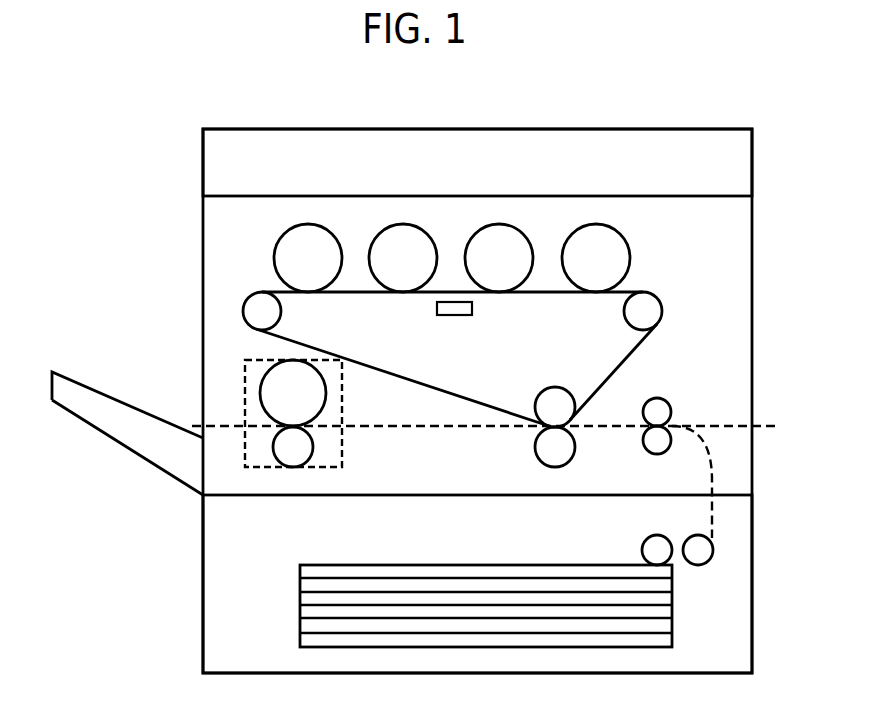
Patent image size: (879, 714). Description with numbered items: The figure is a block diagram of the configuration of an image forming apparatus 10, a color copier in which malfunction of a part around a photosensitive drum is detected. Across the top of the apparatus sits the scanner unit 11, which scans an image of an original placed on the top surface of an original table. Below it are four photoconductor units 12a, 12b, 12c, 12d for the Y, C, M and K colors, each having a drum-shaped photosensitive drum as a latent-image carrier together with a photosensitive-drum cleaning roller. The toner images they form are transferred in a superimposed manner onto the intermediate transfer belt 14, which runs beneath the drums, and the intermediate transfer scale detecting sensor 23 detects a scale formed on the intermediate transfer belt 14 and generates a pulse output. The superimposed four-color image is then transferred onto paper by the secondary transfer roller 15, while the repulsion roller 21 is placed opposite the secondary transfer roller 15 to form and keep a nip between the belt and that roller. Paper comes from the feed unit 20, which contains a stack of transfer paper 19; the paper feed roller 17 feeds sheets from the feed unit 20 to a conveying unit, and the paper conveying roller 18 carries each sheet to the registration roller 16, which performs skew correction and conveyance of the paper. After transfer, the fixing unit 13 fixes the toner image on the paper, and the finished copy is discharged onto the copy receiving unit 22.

The image forming apparatus 10 is at (166, 79).
The scanner unit 11 is at (503, 130).
The photoconductor unit 12a is at (341, 257).
The photoconductor unit 12b is at (436, 257).
The photoconductor unit 12c is at (533, 257).
The photoconductor unit 12d is at (628, 257).
The fixing unit 13 is at (243, 397).
The intermediate transfer belt 14 is at (633, 357).
The secondary transfer roller 15 is at (575, 447).
The registration roller 16 is at (668, 438).
The paper feed roller 17 is at (642, 551).
The paper conveying roller 18 is at (697, 565).
The transfer paper 19 is at (372, 565).
The feed unit 20 is at (203, 624).
The repulsion roller 21 is at (555, 388).
The copy receiving unit 22 is at (102, 393).
The intermediate transfer scale detecting sensor 23 is at (472, 308).